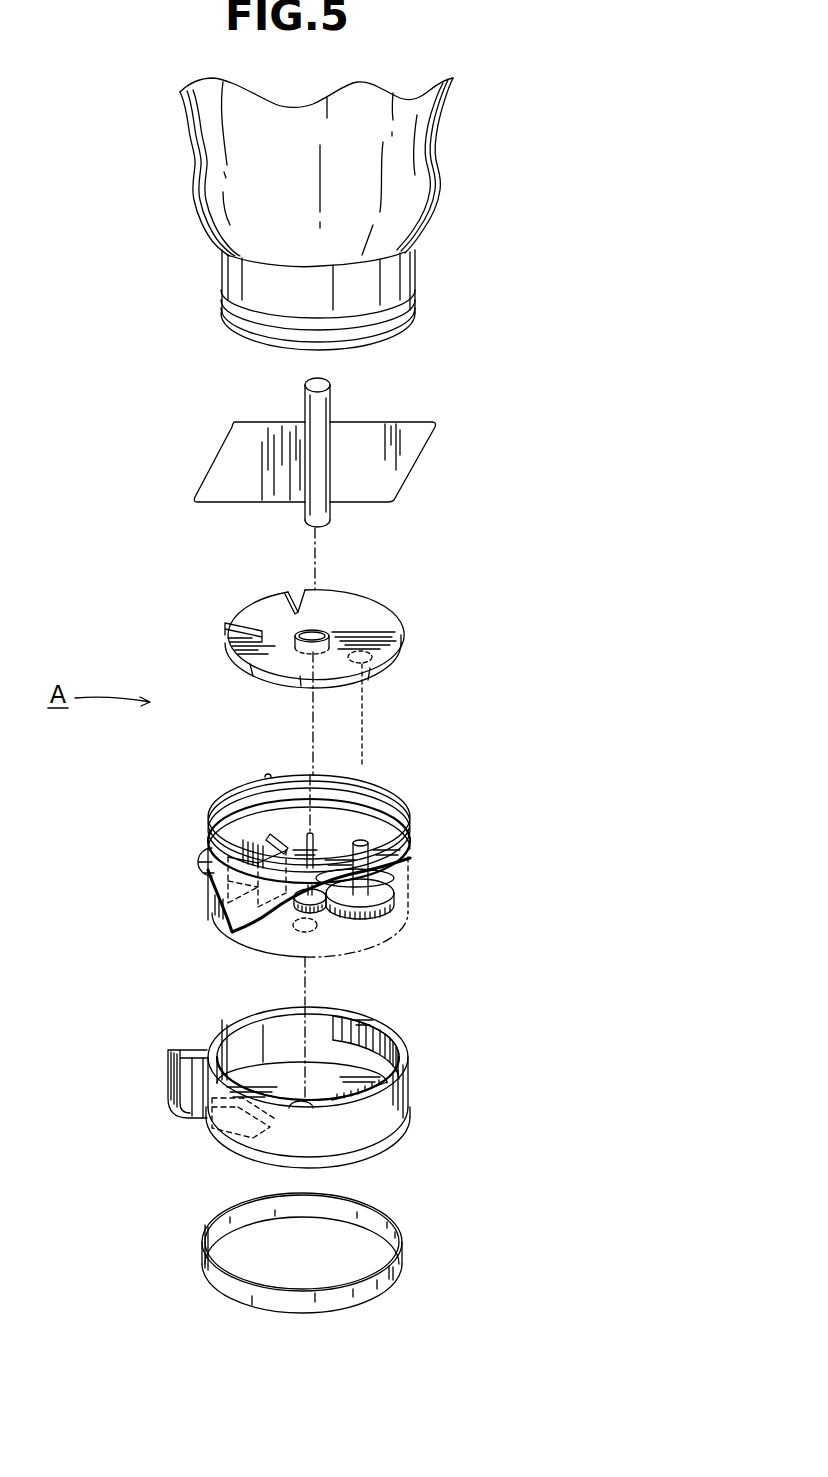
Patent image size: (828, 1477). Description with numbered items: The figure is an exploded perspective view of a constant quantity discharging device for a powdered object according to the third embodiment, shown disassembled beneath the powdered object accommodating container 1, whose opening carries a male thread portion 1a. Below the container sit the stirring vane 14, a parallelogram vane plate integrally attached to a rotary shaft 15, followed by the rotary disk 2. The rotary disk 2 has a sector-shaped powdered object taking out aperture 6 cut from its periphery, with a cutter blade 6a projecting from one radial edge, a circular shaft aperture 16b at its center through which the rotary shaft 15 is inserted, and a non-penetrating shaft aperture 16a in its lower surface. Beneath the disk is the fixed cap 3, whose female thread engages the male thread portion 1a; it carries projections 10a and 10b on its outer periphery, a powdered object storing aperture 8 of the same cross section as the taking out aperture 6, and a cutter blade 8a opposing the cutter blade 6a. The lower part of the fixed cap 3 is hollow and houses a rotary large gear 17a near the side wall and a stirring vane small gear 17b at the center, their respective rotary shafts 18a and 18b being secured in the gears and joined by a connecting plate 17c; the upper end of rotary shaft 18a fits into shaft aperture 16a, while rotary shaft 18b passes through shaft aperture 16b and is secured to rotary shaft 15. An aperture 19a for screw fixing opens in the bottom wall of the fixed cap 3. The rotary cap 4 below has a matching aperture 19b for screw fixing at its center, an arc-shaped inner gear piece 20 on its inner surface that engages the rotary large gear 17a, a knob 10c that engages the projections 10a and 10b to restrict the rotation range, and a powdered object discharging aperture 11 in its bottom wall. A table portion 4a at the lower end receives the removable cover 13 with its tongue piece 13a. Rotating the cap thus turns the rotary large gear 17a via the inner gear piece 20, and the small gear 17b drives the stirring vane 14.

The powdered object accommodating container 1 is at (428, 197).
The male thread portion 1a is at (413, 300).
The rotary shaft 15 is at (330, 400).
The stirring vane 14 is at (433, 423).
The rotary disk 2 is at (309, 610).
The powdered object taking out aperture 6 is at (265, 610).
The cutter blade 6a is at (230, 621).
The circular shaft aperture 16b is at (327, 630).
The shaft aperture 16a is at (373, 655).
The fixed cap 3 is at (310, 848).
The projection 10a is at (205, 870).
The projection 10b is at (266, 777).
The powdered object storing aperture 8 is at (217, 893).
The cutter blade 8a is at (280, 835).
The rotary shaft 18a is at (367, 843).
The rotary shaft 18b is at (317, 837).
The rotary large gear 17a is at (393, 893).
The stirring vane small gear 17b is at (325, 905).
The connecting plate 17c is at (383, 870).
The aperture for screw fixing 19a is at (312, 930).
The rotary cap 4 is at (291, 1096).
The table portion 4a is at (383, 1150).
The arc-shaped inner gear piece 20 is at (400, 1053).
The aperture for screw fixing 19b is at (312, 1102).
The knob 10c is at (168, 1070).
The powdered object discharging aperture 11 is at (215, 1122).
The cover 13 is at (339, 1253).
The tongue piece 13a is at (400, 1263).